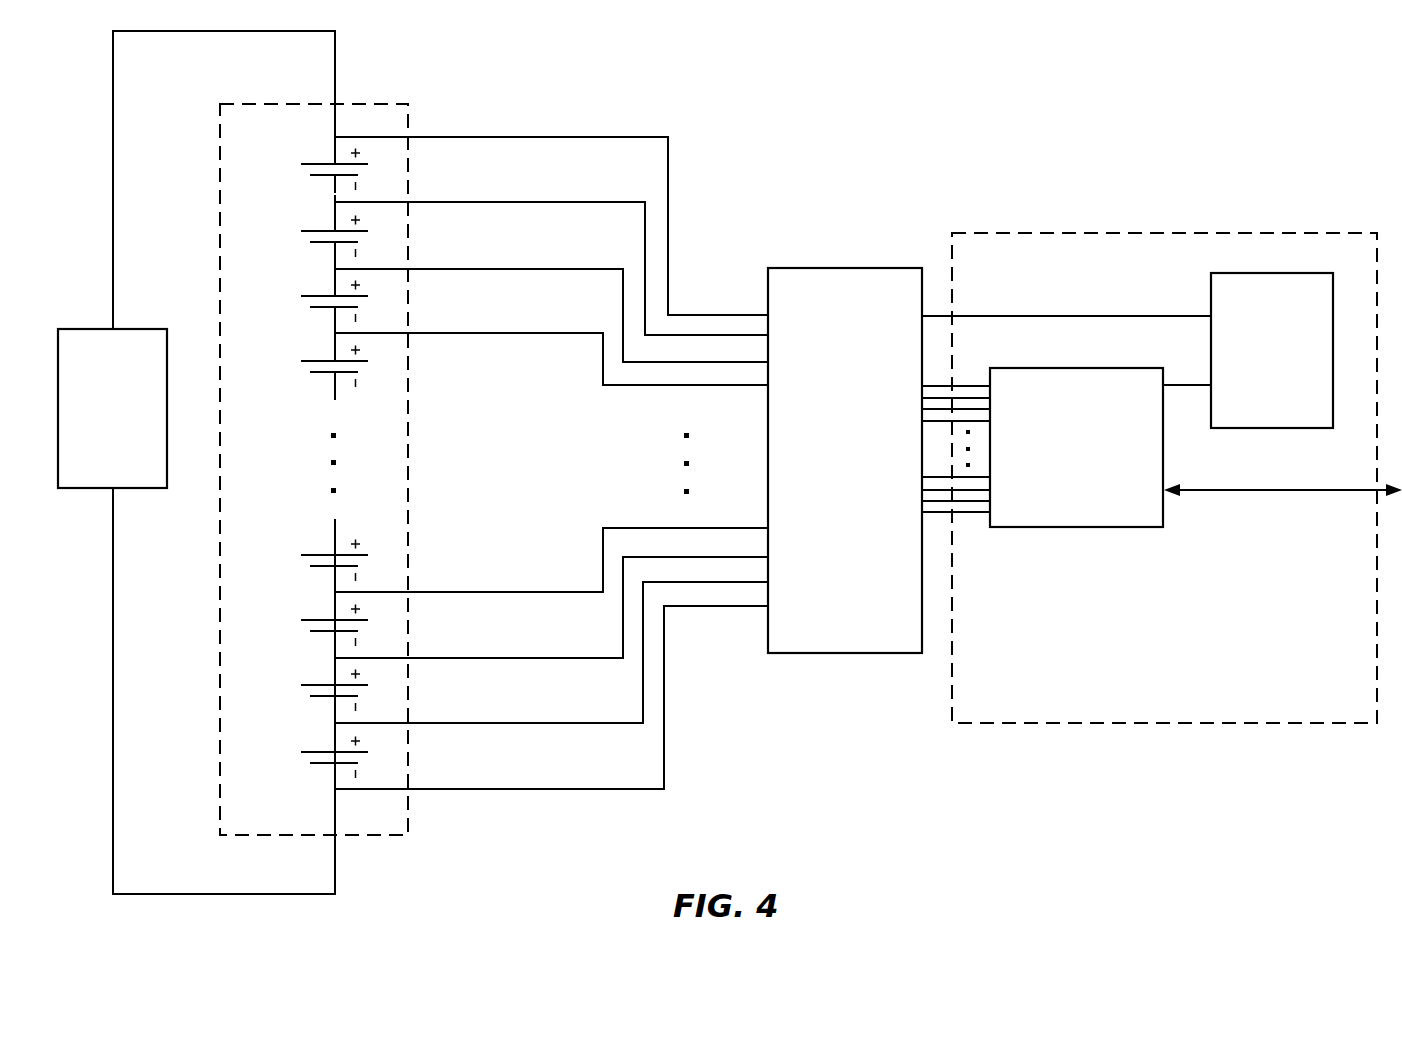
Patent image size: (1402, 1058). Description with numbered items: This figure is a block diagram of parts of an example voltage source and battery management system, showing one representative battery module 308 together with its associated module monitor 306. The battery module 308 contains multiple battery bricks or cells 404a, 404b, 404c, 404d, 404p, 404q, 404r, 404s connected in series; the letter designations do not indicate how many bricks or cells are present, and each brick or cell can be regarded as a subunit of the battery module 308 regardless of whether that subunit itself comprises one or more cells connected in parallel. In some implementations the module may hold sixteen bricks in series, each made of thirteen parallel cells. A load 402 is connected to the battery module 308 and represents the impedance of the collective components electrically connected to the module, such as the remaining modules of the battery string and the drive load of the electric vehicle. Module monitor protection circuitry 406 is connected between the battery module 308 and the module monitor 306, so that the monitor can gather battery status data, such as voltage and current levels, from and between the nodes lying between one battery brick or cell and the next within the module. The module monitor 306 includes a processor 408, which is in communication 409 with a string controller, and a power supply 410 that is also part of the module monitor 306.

The module monitor 306 is at (1164, 462).
The battery module 308 is at (220, 160).
The load 402 is at (126, 490).
The battery brick or cell 404a is at (302, 173).
The battery brick or cell 404b is at (302, 240).
The battery brick or cell 404c is at (302, 305).
The battery brick or cell 404d is at (302, 370).
The battery brick or cell 404p is at (302, 564).
The battery brick or cell 404q is at (302, 629).
The battery brick or cell 404r is at (302, 694).
The battery brick or cell 404s is at (302, 761).
The module monitor protection circuitry 406 is at (842, 654).
The processor 408 is at (1108, 528).
The communication 409 is at (1258, 495).
The power supply 410 is at (1245, 430).